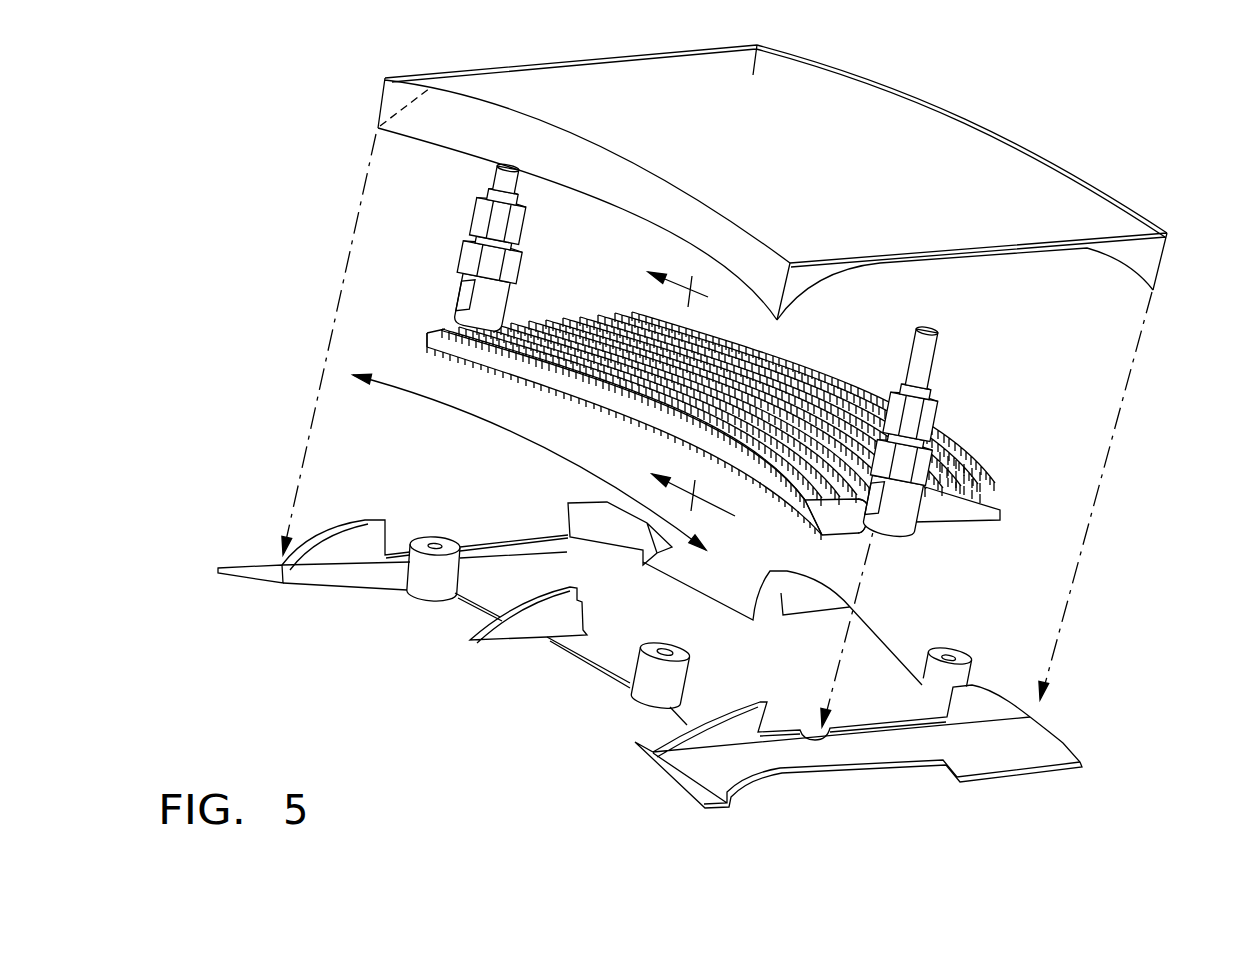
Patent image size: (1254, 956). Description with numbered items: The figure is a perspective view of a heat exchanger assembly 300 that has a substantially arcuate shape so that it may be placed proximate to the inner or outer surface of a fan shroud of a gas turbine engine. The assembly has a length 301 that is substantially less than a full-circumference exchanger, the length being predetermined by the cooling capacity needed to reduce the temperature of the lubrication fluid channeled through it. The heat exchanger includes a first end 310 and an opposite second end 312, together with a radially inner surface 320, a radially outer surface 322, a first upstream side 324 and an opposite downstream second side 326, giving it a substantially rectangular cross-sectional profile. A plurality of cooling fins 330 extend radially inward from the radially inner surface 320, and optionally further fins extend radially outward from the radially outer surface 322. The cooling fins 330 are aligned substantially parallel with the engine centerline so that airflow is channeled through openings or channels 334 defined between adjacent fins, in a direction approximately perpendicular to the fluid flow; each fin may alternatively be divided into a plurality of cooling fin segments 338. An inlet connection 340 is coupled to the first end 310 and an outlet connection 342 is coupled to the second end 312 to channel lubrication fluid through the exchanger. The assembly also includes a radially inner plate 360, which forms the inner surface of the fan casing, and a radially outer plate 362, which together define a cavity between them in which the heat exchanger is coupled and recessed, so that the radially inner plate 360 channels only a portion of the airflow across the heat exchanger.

The heat exchanger assembly 300 is at (727, 426).
The length 301 is at (533, 440).
The first end 310 is at (614, 436).
The second end 312 is at (940, 487).
The radially inner surface 320 is at (800, 535).
The radially outer surface 322 is at (968, 500).
The first upstream side 324 is at (738, 468).
The downstream second side 326 is at (960, 480).
The cooling fins 330 is at (536, 389).
The openings or channels 334 is at (746, 336).
The cooling fin segments 338 is at (807, 370).
The inlet connection 340 is at (480, 228).
The outlet connection 342 is at (950, 444).
The radially inner plate 360 is at (607, 652).
The radially outer plate 362 is at (930, 118).